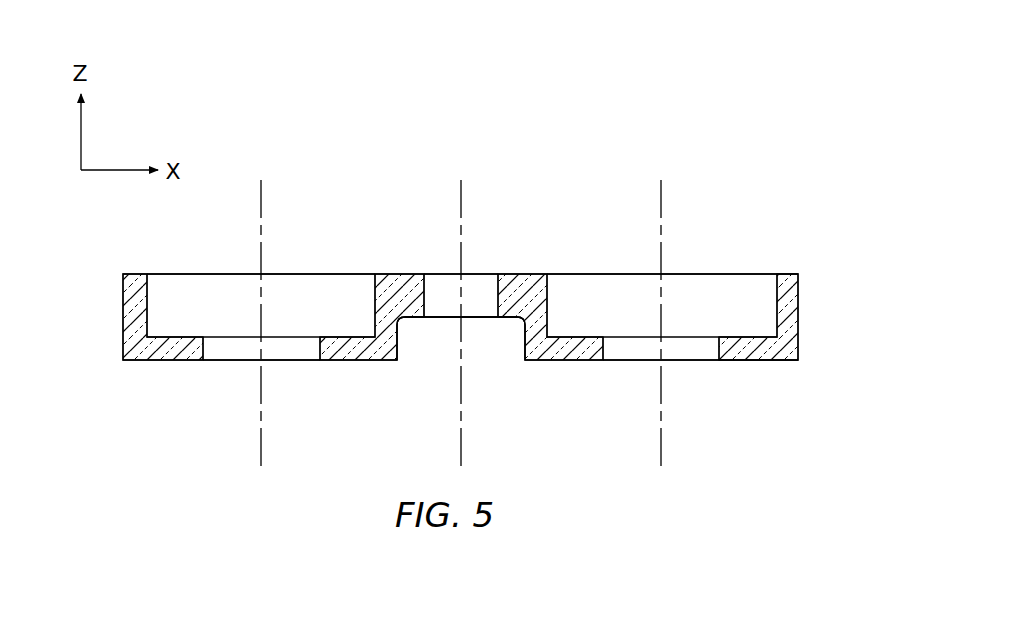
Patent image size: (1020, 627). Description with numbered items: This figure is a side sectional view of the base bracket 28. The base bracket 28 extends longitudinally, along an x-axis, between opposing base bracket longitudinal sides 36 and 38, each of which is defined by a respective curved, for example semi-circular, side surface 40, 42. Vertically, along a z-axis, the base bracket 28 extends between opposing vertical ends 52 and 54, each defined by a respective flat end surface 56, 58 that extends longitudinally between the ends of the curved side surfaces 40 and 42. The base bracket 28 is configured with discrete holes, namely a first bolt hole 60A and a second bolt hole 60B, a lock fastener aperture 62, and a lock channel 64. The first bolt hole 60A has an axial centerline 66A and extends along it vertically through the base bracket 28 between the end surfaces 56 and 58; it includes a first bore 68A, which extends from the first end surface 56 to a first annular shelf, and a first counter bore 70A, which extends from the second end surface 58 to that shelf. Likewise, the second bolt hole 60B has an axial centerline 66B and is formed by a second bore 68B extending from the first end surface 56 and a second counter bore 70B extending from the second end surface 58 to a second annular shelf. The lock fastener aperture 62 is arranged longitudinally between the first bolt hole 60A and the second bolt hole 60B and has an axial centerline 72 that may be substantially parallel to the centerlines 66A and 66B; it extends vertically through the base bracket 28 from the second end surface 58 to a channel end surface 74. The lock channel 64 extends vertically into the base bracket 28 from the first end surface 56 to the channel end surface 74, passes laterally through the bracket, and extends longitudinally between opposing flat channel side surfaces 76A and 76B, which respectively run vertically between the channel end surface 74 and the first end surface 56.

The base bracket 28 is at (462, 273).
The base bracket longitudinal side 36 is at (798, 335).
The curved side surface 40 is at (798, 313).
The base bracket longitudinal side 38 is at (123, 313).
The curved side surface 42 is at (125, 337).
The base bracket vertical end 52 is at (758, 404).
The first end surface 56 is at (778, 361).
The base bracket vertical end 54 is at (811, 232).
The second end surface 58 is at (786, 274).
The first bolt hole 60A is at (701, 299).
The second bolt hole 60B is at (292, 299).
The lock fastener aperture 62 is at (481, 297).
The lock channel 64 is at (435, 361).
The axial centerline 66A is at (661, 200).
The axial centerline 66B is at (261, 200).
The first bore 68A is at (630, 351).
The second bore 68B is at (226, 351).
The first counter bore 70A is at (604, 297).
The second counter bore 70B is at (207, 297).
The axial centerline 72 is at (461, 200).
The channel end surface 74 is at (517, 323).
The channel side surface 76A is at (522, 350).
The channel side surface 76B is at (399, 348).